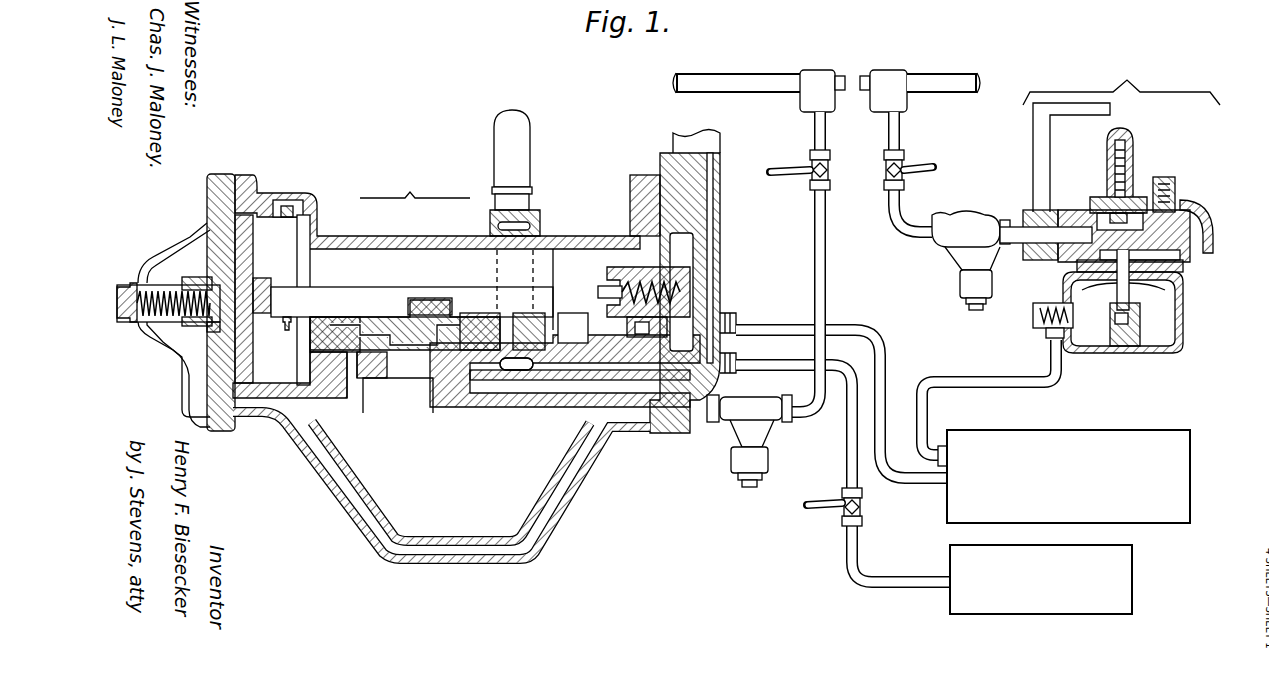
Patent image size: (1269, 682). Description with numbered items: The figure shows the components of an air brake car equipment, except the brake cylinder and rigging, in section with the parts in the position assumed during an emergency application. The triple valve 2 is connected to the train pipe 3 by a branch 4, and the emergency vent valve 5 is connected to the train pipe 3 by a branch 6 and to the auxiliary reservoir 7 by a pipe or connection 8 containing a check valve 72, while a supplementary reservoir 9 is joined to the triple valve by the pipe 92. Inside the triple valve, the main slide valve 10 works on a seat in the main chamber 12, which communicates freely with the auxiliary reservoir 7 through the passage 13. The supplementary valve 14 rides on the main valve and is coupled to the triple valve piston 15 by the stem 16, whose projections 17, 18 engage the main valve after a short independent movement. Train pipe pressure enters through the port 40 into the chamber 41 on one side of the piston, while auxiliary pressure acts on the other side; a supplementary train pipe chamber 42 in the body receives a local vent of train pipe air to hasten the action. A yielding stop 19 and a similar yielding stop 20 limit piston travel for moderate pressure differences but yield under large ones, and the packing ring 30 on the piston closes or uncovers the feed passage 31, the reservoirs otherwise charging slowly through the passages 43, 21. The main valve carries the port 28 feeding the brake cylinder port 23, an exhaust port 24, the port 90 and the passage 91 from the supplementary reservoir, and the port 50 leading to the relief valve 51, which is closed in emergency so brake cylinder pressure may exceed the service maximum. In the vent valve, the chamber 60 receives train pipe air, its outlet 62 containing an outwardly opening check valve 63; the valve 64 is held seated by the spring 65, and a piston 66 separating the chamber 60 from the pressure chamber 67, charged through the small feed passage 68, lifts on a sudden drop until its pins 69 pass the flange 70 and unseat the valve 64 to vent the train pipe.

The triple valve 2 is at (415, 184).
The train pipe 3 is at (725, 84).
The branch 4 is at (814, 230).
The emergency vent valve 5 is at (1121, 132).
The branch 6 is at (897, 195).
The auxiliary reservoir 7 is at (1068, 476).
The pipe or connection 8 is at (988, 382).
The supplementary reservoir 9 is at (1041, 579).
The main slide valve 10 is at (360, 318).
The main chamber 12 is at (410, 252).
The pipe or passage 13 is at (748, 330).
The supplementary valve 14 is at (445, 296).
The triple valve piston 15 is at (250, 255).
The stem 16 is at (318, 295).
The projection 17 is at (287, 330).
The projection 18 is at (555, 310).
The yielding stop 19 is at (200, 280).
The yielding stop 20 is at (605, 285).
The passage 21 is at (330, 318).
The brake cylinder port 23 is at (732, 393).
The exhaust port 24 is at (470, 393).
The port 28 is at (472, 312).
The packing ring 30 is at (218, 218).
The feed passage 31 is at (288, 203).
The port 40 is at (478, 552).
The chamber 41 is at (175, 345).
The supplementary train pipe chamber 42 is at (451, 481).
The passage 43 is at (364, 400).
The port 50 is at (516, 372).
The safety or relief valve 51 is at (520, 160).
The chamber 60 is at (1085, 240).
The outlet 62 is at (1188, 250).
The check valve 63 is at (1185, 205).
The valve 64 is at (1137, 195).
The spring 65 is at (1132, 145).
The piston 66 is at (1140, 286).
The pressure chamber 67 is at (1165, 340).
The feed passage 68 is at (1140, 312).
The pins 69 is at (1098, 222).
The flange or projection 70 is at (1112, 213).
The check valve 72 is at (1048, 333).
The port 90 is at (520, 312).
The passage 91 is at (556, 336).
The pipe 92 is at (858, 538).